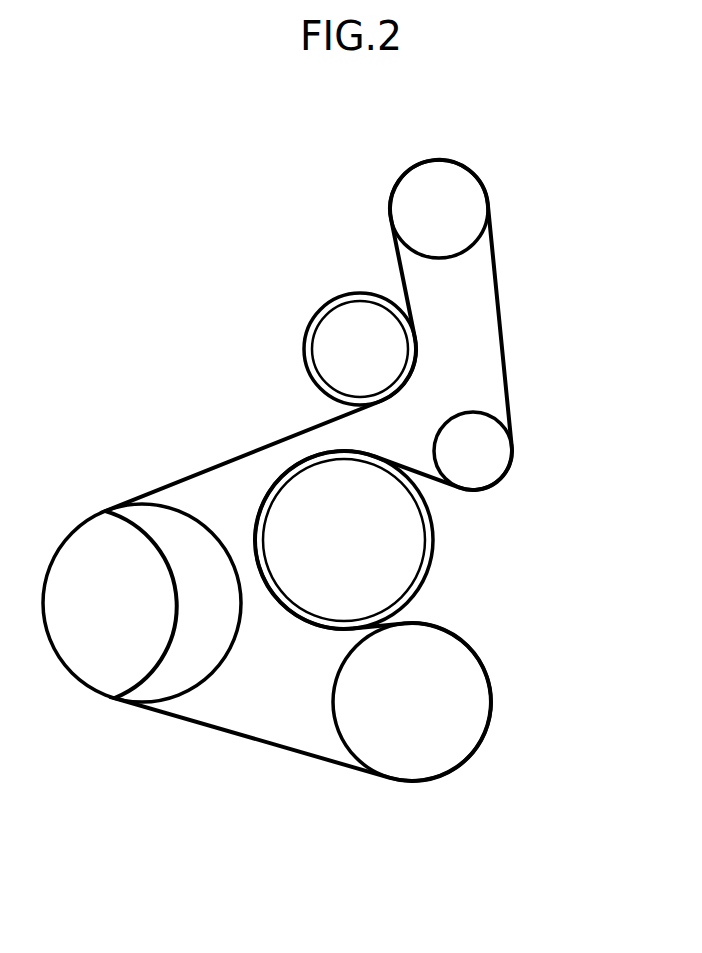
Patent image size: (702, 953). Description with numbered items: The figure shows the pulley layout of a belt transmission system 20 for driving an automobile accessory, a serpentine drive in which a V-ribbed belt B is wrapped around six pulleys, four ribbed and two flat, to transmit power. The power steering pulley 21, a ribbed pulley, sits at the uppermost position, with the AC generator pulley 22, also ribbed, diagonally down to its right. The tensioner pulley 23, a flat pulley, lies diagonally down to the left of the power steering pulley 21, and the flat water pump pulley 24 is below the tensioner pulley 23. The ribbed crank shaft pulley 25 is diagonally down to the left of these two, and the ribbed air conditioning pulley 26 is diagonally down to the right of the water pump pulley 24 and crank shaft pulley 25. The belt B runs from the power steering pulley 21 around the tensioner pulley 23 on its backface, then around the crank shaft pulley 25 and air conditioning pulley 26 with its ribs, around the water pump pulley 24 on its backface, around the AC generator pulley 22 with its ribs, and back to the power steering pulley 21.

The belt transmission system 20 is at (224, 181).
The power steering pulley 21 is at (470, 188).
The AC generator pulley 22 is at (490, 467).
The tensioner pulley 23 is at (340, 313).
The water pump pulley 24 is at (413, 543).
The crank shaft pulley 25 is at (95, 677).
The air conditioning pulley 26 is at (475, 702).
The V-ribbed belt B is at (250, 448).